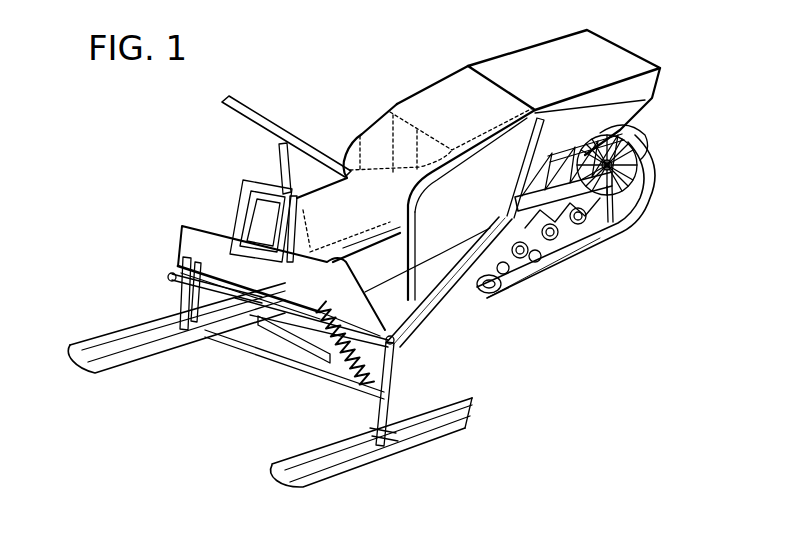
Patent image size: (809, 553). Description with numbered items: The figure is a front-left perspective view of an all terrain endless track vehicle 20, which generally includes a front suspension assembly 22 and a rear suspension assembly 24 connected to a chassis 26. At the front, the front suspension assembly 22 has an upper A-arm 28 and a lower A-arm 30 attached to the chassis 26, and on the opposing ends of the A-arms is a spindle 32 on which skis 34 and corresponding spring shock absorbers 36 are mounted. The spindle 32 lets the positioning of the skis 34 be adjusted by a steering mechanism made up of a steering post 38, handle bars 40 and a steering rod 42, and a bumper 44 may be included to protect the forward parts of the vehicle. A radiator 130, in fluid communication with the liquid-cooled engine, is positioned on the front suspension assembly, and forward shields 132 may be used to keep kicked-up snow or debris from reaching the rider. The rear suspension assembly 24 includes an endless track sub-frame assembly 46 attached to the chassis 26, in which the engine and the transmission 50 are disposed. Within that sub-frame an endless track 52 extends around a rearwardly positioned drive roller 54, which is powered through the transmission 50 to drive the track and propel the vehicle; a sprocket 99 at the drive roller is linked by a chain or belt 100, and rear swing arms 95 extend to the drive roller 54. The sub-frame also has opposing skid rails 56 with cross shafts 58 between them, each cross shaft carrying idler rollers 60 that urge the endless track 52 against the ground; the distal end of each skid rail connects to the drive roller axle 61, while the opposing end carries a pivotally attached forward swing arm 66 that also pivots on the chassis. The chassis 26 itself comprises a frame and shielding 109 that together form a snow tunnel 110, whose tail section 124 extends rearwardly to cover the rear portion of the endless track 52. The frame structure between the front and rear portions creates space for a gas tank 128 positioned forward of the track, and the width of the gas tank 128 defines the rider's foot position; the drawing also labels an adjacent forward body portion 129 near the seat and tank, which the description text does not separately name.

The all terrain endless track vehicle 20 is at (601, 403).
The front suspension assembly 22 is at (246, 375).
The rear suspension assembly 24 is at (622, 217).
The chassis 26 is at (414, 304).
The upper A-arm 28 is at (400, 365).
The lower A-arm 30 is at (320, 353).
The spindle 32 is at (375, 428).
The skis 34 is at (74, 350).
The spring shock absorbers 36 is at (184, 276).
The steering post 38 is at (279, 160).
The handle bars 40 is at (222, 99).
The steering rod 42 is at (285, 332).
The bumper 44 is at (215, 332).
The endless track sub-frame assembly 46 is at (627, 222).
The transmission 50 is at (503, 288).
The endless track 52 is at (620, 218).
The drive roller 54 is at (626, 145).
The skid rails 56 is at (556, 243).
The cross shafts 58 is at (566, 250).
The idler rollers 60 is at (592, 240).
The drive roller axle 61 is at (630, 126).
The forward swing arm 66 is at (480, 292).
The rear swing arms 95 is at (630, 188).
The sprocket 99 is at (633, 167).
The chain or belt 100 is at (642, 150).
The shielding 109 is at (476, 209).
The snow tunnel 110 is at (530, 48).
The tail section 124 is at (630, 46).
The gas tank 128 is at (428, 325).
The seat front 129 is at (375, 128).
The radiator 130 is at (240, 203).
The forward shields 132 is at (281, 281).